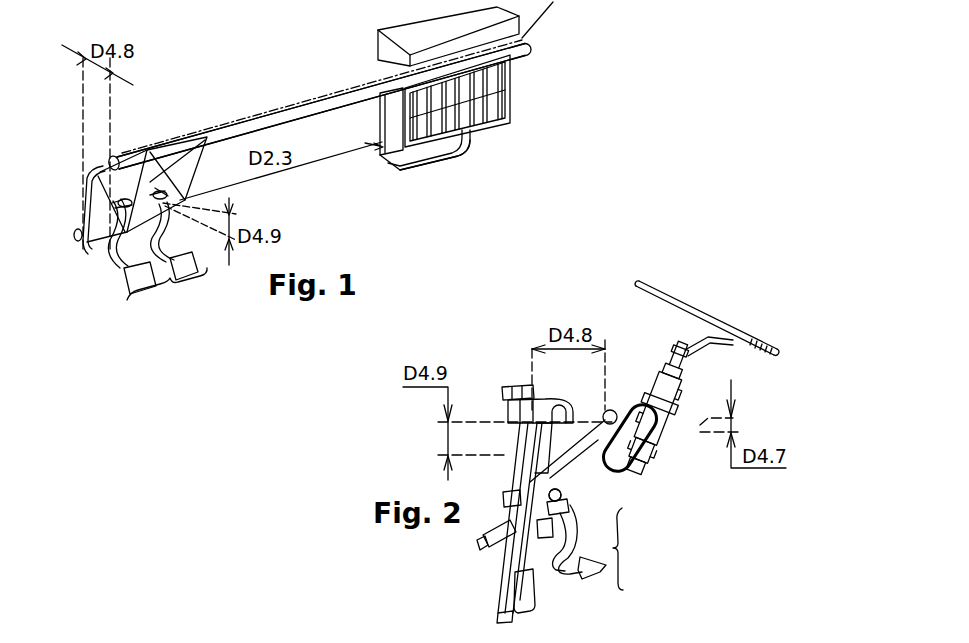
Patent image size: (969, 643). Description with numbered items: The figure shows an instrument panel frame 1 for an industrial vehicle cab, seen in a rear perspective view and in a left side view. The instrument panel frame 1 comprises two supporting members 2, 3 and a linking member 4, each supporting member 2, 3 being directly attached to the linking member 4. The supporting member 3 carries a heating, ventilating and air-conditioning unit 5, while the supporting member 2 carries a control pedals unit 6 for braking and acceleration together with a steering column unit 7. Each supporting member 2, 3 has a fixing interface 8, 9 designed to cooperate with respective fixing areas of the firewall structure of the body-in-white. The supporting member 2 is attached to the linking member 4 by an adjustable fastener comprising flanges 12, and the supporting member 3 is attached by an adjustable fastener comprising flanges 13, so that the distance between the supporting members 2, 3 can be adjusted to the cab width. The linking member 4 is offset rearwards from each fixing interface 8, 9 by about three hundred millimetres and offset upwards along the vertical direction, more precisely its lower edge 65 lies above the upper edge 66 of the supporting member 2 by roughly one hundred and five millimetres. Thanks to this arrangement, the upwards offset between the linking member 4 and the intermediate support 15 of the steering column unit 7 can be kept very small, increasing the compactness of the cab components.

In FIG. 1, the instrument panel frame 1 is at (217, 53).
In FIG. 2, the instrument panel frame 1 is at (699, 280).
In FIG. 1, the supporting member 2 is at (94, 167).
In FIG. 1, the supporting member 3 is at (417, 188).
In FIG. 1, the linking member 4 is at (288, 104).
In FIG. 2, the linking member 4 is at (620, 407).
In FIG. 1, the heating, ventilating and air-conditioning unit 5 is at (473, 97).
In FIG. 1, the control pedals unit 6 is at (167, 261).
In FIG. 2, the control pedals unit 6 is at (592, 539).
In FIG. 2, the steering column unit 7 is at (693, 388).
In FIG. 1, the fixing interface 8 is at (86, 250).
In FIG. 2, the fixing interface 8 is at (522, 462).
In FIG. 1, the fixing interface 9 is at (397, 180).
In FIG. 1, the flanges 12 is at (152, 160).
In FIG. 2, the flanges 12 is at (592, 448).
In FIG. 1, the flanges 13 is at (378, 47).
In FIG. 2, the intermediate support 15 is at (637, 408).
In FIG. 1, the lower edge 65 is at (282, 124).
In FIG. 1, the upper edge 66 is at (84, 248).